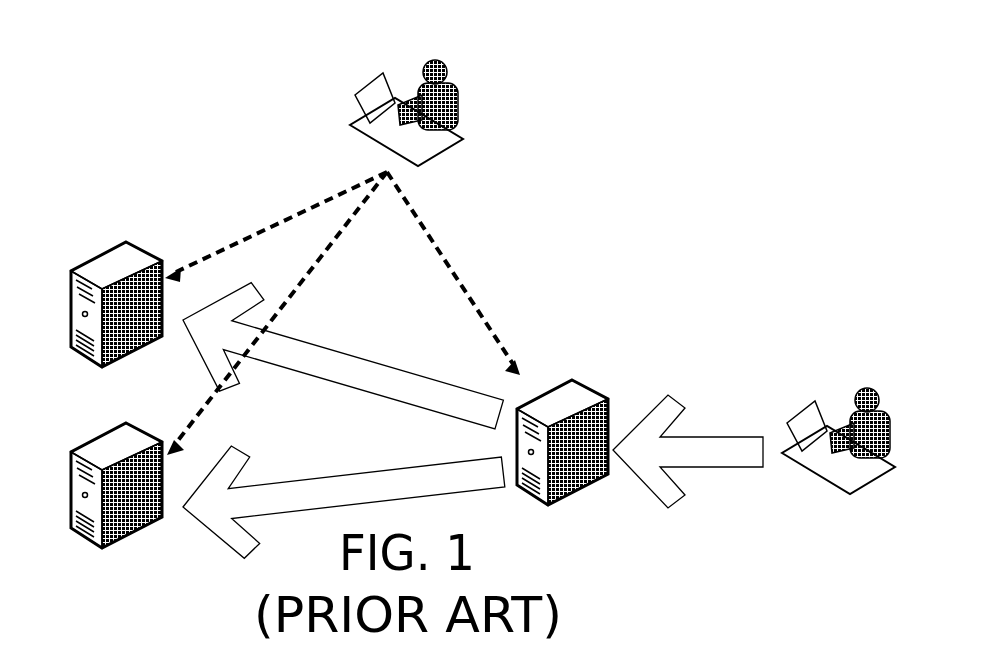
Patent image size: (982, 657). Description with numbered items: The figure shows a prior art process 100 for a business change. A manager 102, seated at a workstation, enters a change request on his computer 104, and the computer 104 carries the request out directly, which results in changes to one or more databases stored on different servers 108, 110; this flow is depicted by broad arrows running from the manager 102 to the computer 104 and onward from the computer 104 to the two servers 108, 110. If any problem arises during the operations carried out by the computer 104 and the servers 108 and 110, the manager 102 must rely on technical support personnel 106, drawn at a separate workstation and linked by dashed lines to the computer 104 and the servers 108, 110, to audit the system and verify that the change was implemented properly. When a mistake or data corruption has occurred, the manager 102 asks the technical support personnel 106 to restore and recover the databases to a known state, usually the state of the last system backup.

The process 100 is at (203, 54).
The manager 102 is at (857, 393).
The computer 104 is at (567, 380).
The technical support personnel 106 is at (458, 110).
The server 108 is at (107, 250).
The server 110 is at (107, 433).